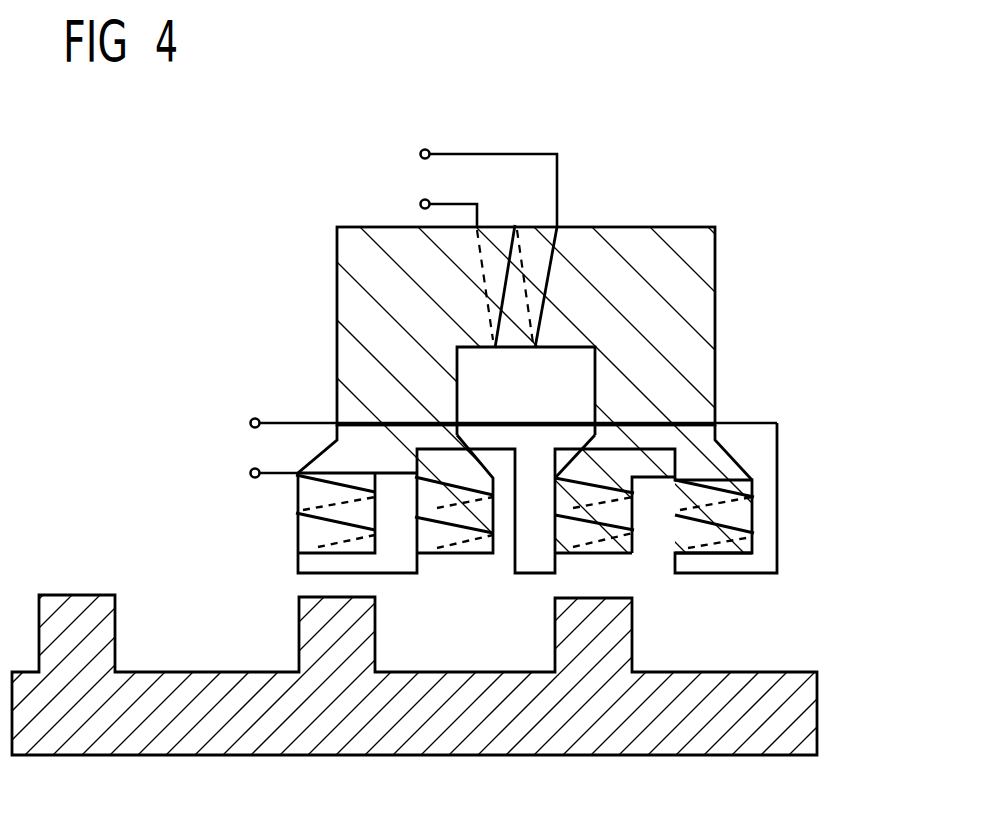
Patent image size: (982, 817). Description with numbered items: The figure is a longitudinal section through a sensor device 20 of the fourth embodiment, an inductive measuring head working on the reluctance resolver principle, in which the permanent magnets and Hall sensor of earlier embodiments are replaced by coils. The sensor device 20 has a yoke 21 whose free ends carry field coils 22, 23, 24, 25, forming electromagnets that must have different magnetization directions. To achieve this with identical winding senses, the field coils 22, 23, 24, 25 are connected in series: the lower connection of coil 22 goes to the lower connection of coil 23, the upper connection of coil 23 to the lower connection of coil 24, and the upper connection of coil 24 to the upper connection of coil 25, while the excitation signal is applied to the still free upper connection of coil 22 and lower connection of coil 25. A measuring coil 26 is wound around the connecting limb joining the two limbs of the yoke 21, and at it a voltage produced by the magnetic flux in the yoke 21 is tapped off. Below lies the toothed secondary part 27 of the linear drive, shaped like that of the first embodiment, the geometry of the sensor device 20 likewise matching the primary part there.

The sensor device 20 is at (570, 396).
The yoke 21 is at (717, 290).
The field coil 22 is at (298, 540).
The field coil 23 is at (474, 553).
The field coil 24 is at (620, 553).
The field coil 25 is at (752, 543).
The measuring coil 26 is at (562, 262).
The secondary part 27 is at (757, 670).